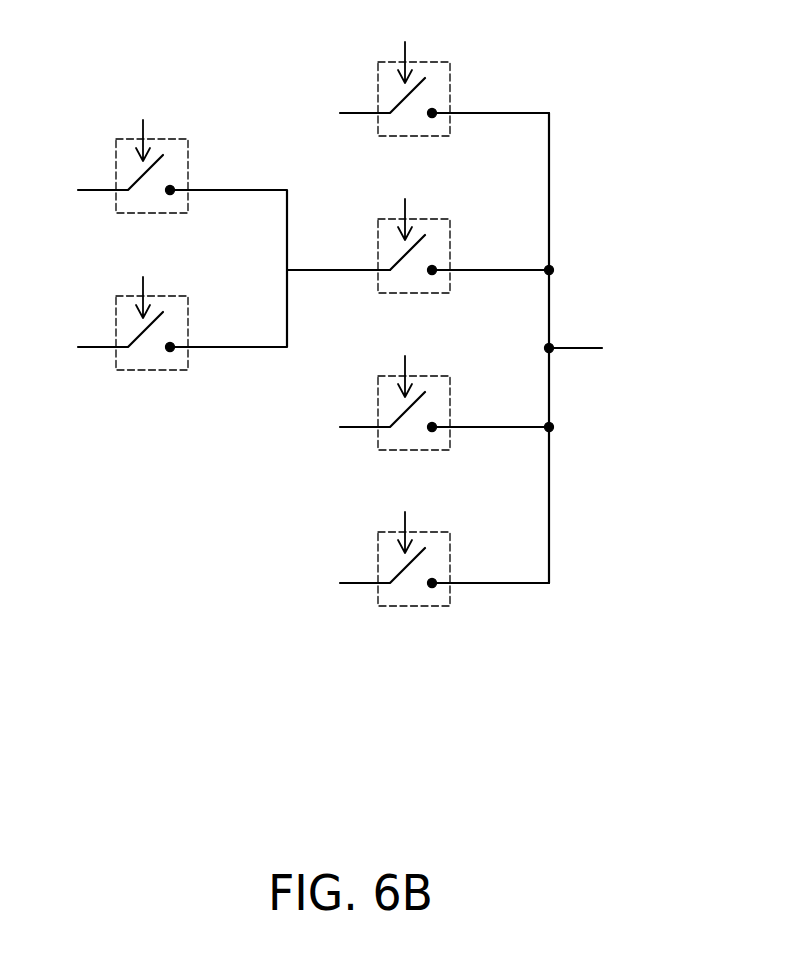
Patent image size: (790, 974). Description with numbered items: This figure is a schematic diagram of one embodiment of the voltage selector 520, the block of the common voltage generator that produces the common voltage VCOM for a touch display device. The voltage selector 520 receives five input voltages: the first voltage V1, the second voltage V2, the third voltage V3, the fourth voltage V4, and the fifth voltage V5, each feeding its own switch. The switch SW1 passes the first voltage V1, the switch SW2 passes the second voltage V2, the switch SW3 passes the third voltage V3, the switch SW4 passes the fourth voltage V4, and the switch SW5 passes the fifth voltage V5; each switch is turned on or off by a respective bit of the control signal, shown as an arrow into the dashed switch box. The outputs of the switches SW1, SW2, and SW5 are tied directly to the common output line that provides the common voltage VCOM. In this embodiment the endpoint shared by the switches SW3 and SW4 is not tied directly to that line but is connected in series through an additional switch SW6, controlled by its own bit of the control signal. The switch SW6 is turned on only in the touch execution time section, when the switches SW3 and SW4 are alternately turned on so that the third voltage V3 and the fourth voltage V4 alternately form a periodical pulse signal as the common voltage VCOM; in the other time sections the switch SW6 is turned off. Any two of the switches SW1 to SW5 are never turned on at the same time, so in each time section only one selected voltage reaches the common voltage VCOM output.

The voltage selector 520 is at (358, 320).
The switch SW1 is at (426, 69).
The switch SW2 is at (426, 383).
The switch SW3 is at (151, 146).
The switch SW4 is at (151, 303).
The switch SW5 is at (426, 539).
The switch SW6 is at (454, 226).
The first voltage V1 is at (340, 113).
The second voltage V2 is at (340, 427).
The third voltage V3 is at (79, 190).
The fourth voltage V4 is at (79, 347).
The fifth voltage V5 is at (340, 583).
The common voltage VCOM is at (610, 348).